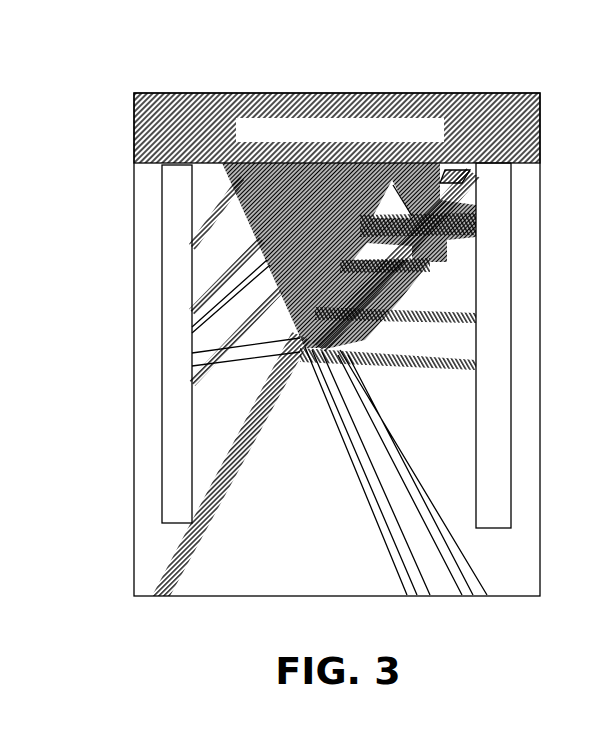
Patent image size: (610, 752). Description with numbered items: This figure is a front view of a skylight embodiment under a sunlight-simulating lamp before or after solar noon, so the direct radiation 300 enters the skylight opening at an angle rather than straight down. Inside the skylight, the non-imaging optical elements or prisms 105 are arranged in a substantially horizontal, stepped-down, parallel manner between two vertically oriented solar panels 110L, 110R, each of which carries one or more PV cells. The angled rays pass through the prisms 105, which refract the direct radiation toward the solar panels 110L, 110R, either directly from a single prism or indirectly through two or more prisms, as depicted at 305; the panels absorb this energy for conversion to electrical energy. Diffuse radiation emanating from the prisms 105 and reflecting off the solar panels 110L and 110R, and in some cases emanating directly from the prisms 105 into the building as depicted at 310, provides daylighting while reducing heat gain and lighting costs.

The direct radiation 300 is at (153, 144).
The prisms 105 is at (210, 176).
The left solar panel 110L is at (170, 225).
The right solar panel 110R is at (497, 418).
The refracted direct radiation 305 is at (190, 245).
The diffuse radiation emanating from prisms 310 is at (481, 597).